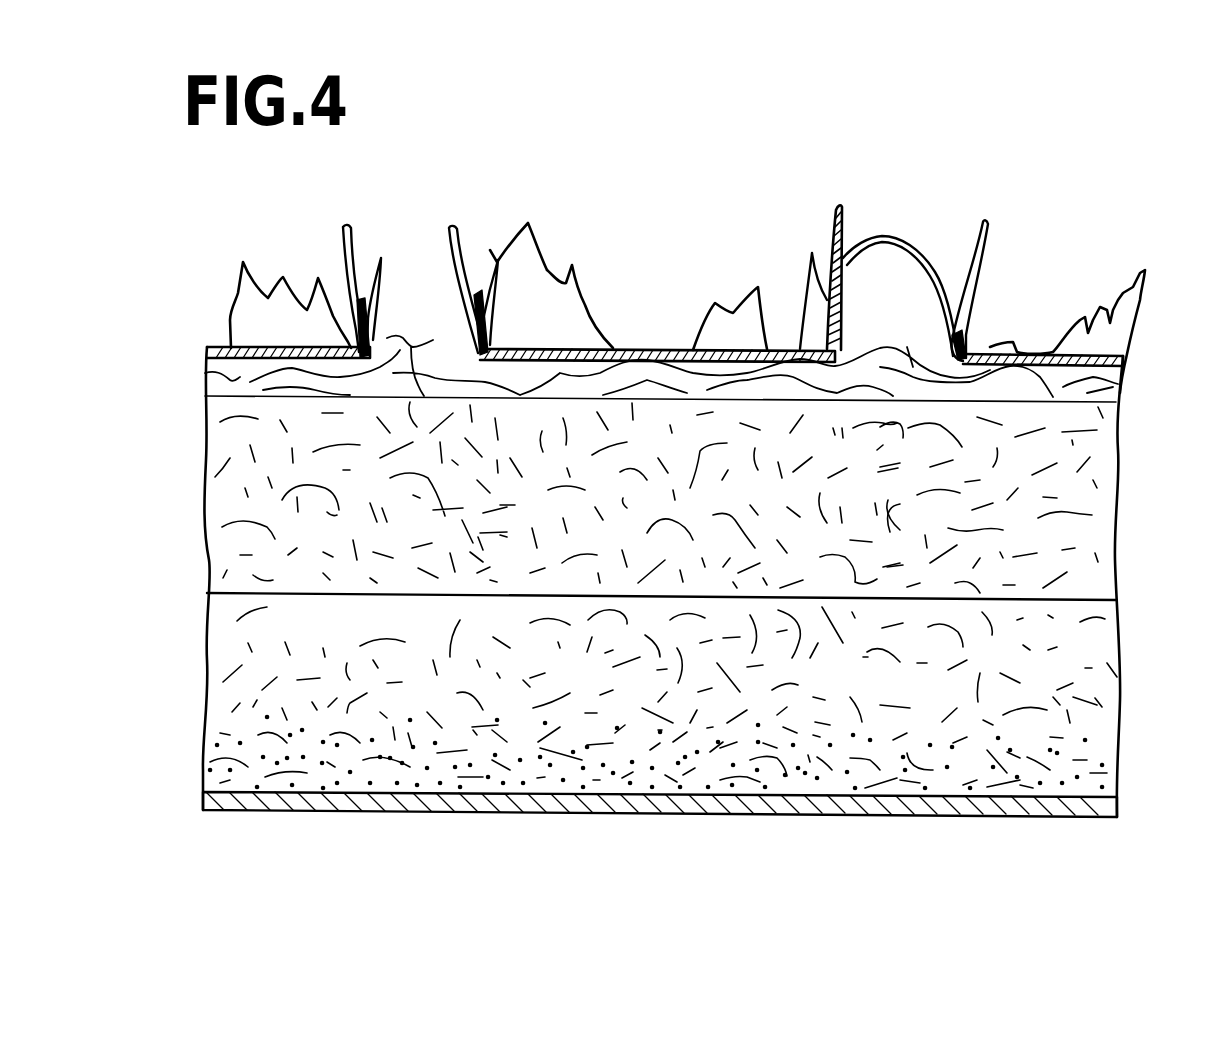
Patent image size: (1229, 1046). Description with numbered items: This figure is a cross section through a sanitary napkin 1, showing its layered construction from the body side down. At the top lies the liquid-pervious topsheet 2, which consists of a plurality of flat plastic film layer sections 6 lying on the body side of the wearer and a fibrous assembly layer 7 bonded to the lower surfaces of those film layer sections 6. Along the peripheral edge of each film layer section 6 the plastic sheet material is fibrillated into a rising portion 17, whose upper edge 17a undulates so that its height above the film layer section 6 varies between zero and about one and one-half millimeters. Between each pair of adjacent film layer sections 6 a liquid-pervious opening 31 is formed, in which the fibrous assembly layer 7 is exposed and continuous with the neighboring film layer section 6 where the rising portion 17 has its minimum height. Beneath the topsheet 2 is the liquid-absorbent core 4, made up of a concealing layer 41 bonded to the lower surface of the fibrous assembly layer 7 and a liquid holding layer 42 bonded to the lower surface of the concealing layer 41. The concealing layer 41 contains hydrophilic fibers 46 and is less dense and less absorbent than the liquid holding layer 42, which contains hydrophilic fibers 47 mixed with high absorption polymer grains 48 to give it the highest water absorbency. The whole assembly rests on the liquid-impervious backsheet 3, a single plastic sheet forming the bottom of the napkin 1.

The sanitary napkin 1 is at (693, 176).
The topsheet 2 is at (183, 289).
The backsheet 3 is at (993, 807).
The liquid-absorbent core 4 is at (1168, 553).
The film layer section 6 is at (256, 345).
The fibrous assembly layer 7 is at (207, 370).
The rising portion 17 is at (542, 304).
The upper edge 17a is at (545, 255).
The liquid-pervious opening 31 is at (457, 343).
The concealing layer 41 is at (1088, 579).
The liquid holding layer 42 is at (1097, 658).
The hydrophilic fibers 46 is at (235, 522).
The hydrophilic fibers 47 is at (237, 621).
The high absorption polymer grains 48 is at (820, 783).